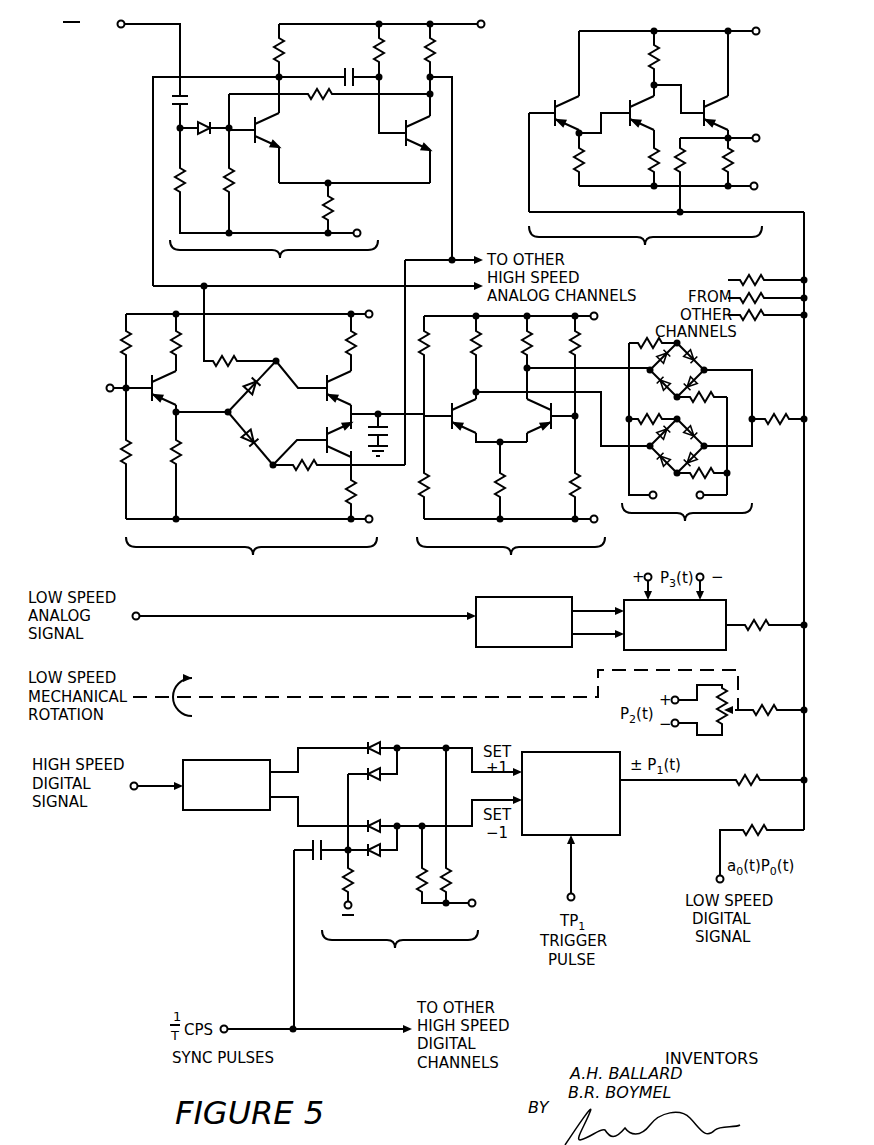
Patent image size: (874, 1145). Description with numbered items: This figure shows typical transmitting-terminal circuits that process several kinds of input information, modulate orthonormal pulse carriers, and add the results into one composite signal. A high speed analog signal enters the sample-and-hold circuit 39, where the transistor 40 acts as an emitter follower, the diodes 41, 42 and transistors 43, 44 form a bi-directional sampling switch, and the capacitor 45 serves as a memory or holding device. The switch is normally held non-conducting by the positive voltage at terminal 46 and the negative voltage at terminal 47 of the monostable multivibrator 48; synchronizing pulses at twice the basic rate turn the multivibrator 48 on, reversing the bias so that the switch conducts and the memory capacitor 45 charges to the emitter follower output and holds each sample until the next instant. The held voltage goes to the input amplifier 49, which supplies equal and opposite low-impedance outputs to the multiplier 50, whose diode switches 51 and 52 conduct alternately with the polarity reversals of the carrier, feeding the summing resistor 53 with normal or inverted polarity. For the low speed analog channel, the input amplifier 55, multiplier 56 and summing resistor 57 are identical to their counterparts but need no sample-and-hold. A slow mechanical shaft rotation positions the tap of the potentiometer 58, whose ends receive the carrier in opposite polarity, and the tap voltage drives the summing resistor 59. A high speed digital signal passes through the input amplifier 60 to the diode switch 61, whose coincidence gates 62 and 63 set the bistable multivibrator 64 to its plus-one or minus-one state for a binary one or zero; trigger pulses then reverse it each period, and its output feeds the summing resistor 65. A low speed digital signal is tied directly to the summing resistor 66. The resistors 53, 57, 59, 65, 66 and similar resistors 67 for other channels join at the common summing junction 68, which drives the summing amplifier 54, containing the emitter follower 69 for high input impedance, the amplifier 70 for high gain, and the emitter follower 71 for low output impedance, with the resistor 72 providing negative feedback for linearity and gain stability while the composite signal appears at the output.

The sample-and-hold circuit 39 is at (255, 553).
The transistor 40 is at (153, 381).
The diode 41 is at (247, 387).
The diode 42 is at (249, 440).
The transistor 43 is at (323, 382).
The transistor 44 is at (323, 442).
The capacitor 45 is at (380, 423).
The terminal 46 is at (277, 76).
The terminal 47 is at (433, 76).
The monostable multivibrator 48 is at (284, 253).
The input amplifier 49 is at (511, 553).
The multiplier 50 is at (684, 523).
The diode switch 51 is at (694, 347).
The diode switch 52 is at (684, 423).
The resistor 53 is at (781, 418).
The summing amplifier 54 is at (641, 244).
The input amplifier 55 is at (517, 650).
The multiplier 56 is at (625, 650).
The summing resistor 57 is at (759, 619).
The potentiometer 58 is at (729, 723).
The summing resistor 59 is at (766, 704).
The input amplifier 60 is at (212, 812).
The diode switch 61 is at (372, 946).
The coincidence gate 62 is at (398, 768).
The coincidence gate 63 is at (407, 858).
The bistable multivibrator 64 is at (582, 754).
The summing resistor 65 is at (738, 785).
The summing resistor 66 is at (762, 828).
The resistors 67 is at (769, 318).
The summing junction 68 is at (800, 497).
The emitter follower 69 is at (556, 107).
The amplifier 70 is at (631, 101).
The emitter follower 71 is at (704, 100).
The resistor 72 is at (686, 160).